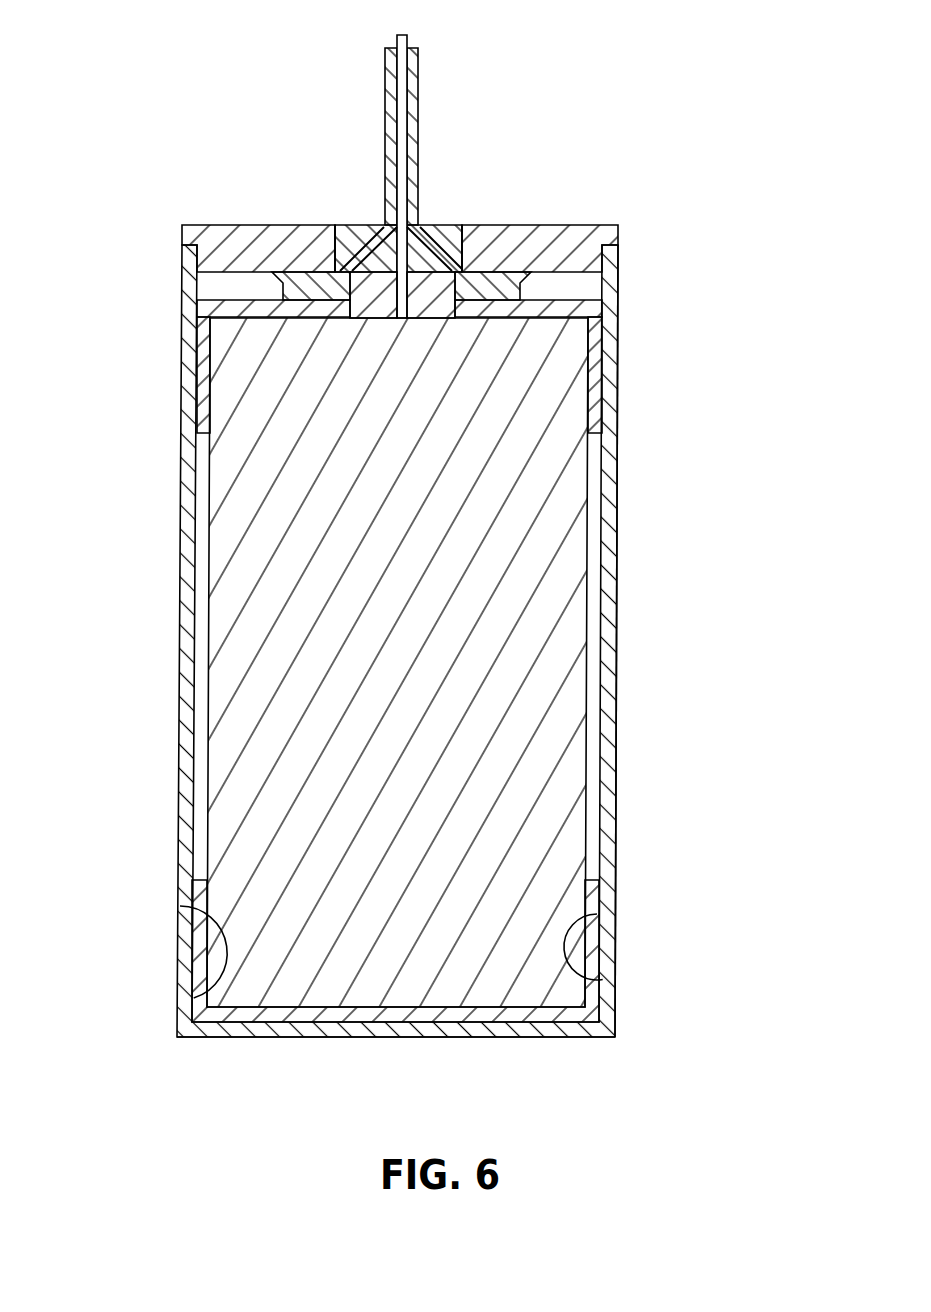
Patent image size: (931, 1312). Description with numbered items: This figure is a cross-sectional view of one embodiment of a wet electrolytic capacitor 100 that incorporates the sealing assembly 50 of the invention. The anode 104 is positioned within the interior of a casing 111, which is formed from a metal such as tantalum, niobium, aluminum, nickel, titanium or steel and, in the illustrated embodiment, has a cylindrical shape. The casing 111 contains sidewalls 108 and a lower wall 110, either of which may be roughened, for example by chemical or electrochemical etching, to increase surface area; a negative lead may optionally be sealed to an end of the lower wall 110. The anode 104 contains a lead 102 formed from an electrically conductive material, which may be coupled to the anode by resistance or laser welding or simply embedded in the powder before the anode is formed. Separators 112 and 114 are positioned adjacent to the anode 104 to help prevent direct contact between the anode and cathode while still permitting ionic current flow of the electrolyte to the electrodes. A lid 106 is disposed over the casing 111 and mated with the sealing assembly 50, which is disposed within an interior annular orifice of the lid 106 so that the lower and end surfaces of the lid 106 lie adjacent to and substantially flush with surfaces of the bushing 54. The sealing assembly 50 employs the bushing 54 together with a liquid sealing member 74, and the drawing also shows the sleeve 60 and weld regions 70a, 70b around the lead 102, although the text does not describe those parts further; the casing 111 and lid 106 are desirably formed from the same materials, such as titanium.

The capacitor 100 is at (775, 263).
The lead 102 is at (408, 41).
The anode 104 is at (415, 616).
The lid 106 is at (579, 240).
The sidewalls 108 is at (618, 665).
The lower wall 110 is at (390, 1037).
The casing 111 is at (632, 762).
The separator 112 is at (603, 312).
The separator 114 is at (597, 914).
The sealing assembly 50 is at (440, 203).
The bushing 54 is at (322, 246).
The terminal sleeve 60 is at (420, 88).
The first weld 70a is at (358, 268).
The second weld 70b is at (445, 268).
The liquid sealing member 74 is at (359, 332).